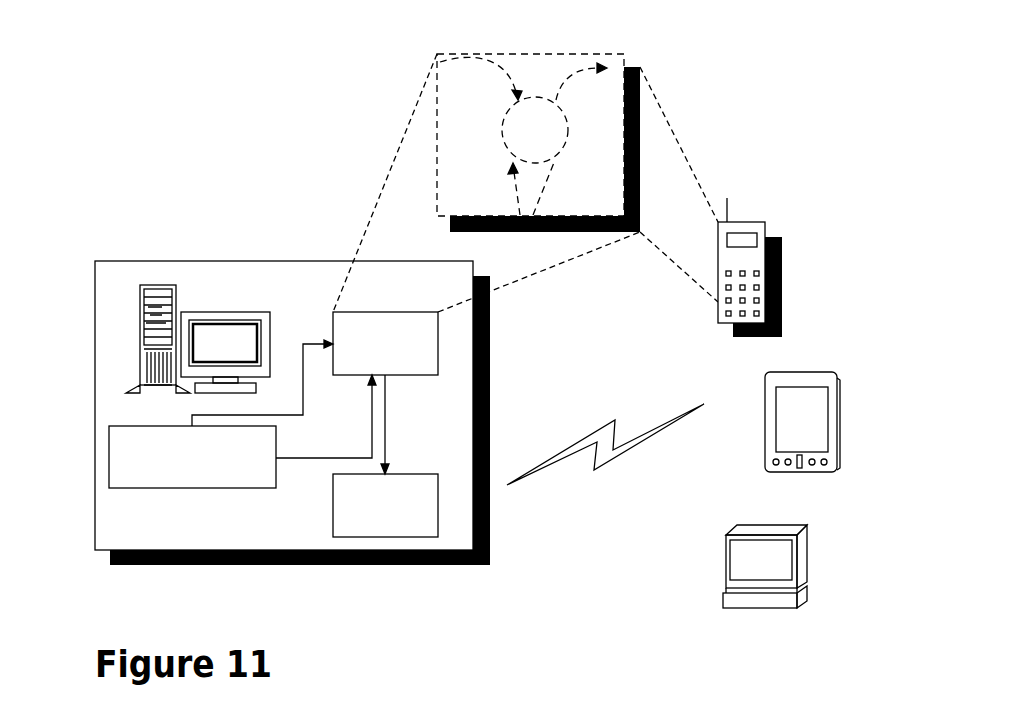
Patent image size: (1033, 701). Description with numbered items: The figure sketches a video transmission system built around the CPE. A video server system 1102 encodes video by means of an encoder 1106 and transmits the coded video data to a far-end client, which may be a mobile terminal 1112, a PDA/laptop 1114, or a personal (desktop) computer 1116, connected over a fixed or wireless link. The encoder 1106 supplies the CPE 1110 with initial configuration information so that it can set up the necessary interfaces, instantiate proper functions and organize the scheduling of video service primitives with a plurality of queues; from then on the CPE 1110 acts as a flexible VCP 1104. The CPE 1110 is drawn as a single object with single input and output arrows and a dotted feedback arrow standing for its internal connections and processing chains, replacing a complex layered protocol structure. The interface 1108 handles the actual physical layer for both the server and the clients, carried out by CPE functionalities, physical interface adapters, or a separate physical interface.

The video server system 1102 is at (210, 262).
The VCP (Video Control Protocol) 1104 is at (333, 322).
The encoder 1106 is at (120, 426).
The interface 1108 is at (345, 537).
The CPE 1110 is at (436, 128).
The mobile terminal 1112 is at (765, 232).
The PDA/laptop 1114 is at (837, 385).
The personal (desktop) computer 1116 is at (805, 567).